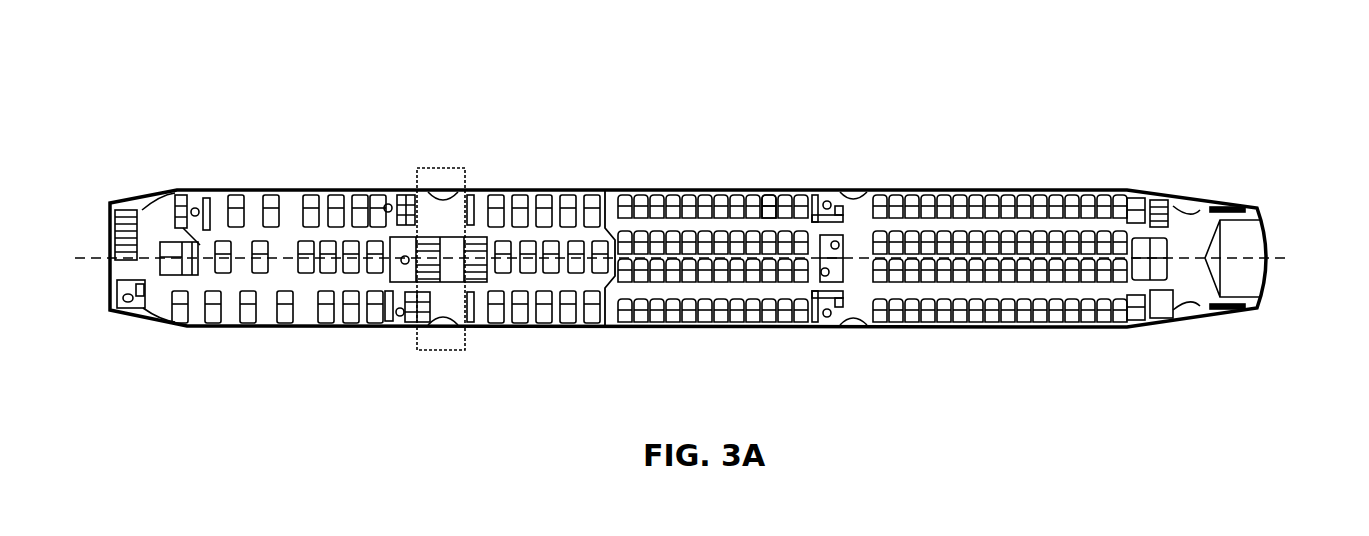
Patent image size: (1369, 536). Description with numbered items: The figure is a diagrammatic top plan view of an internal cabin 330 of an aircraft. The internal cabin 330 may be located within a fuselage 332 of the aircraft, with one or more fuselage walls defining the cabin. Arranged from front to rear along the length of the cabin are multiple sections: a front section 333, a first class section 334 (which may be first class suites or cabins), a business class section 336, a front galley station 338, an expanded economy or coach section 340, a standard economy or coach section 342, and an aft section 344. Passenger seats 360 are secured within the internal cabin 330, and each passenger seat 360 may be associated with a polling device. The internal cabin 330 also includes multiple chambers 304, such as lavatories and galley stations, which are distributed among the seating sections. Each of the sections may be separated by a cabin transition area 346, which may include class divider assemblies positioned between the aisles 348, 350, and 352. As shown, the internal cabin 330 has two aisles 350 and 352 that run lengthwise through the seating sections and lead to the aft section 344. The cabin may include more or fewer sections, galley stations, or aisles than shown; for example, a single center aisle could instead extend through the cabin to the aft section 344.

The internal cabin 330 is at (243, 103).
The fuselage 332 is at (560, 127).
The front section 333 is at (168, 340).
The first class section 334 is at (257, 330).
The business class section 336 is at (325, 190).
The front galley station 338 is at (440, 345).
The expanded economy or coach section 340 is at (538, 330).
The standard economy or coach section 342 is at (660, 190).
The aft section 344 is at (1197, 218).
The cabin transition area 346 is at (178, 192).
The aisle 348 is at (428, 230).
The aisle 350 is at (1002, 227).
The aisle 352 is at (1020, 292).
The passenger seat 360 is at (240, 190).
The chamber 304 is at (403, 255).